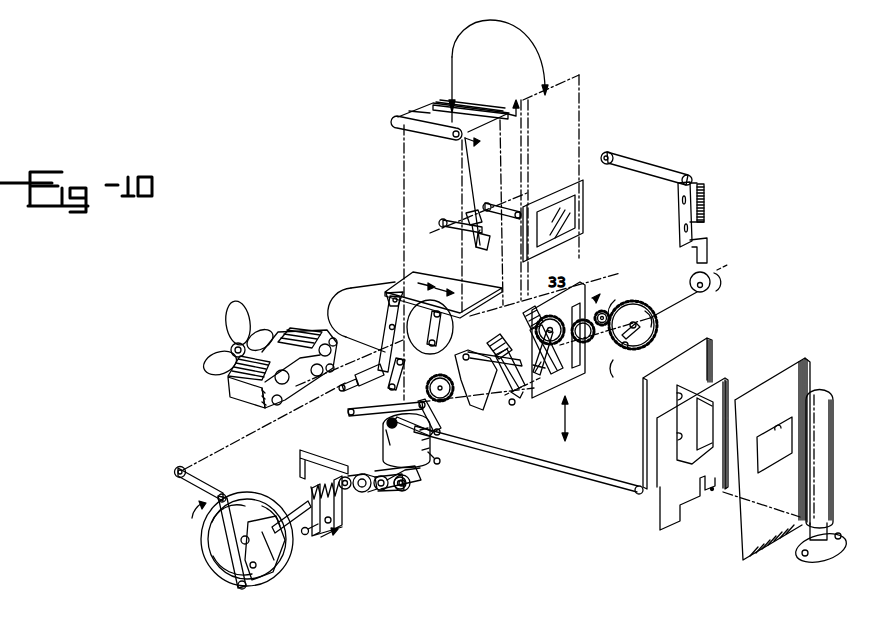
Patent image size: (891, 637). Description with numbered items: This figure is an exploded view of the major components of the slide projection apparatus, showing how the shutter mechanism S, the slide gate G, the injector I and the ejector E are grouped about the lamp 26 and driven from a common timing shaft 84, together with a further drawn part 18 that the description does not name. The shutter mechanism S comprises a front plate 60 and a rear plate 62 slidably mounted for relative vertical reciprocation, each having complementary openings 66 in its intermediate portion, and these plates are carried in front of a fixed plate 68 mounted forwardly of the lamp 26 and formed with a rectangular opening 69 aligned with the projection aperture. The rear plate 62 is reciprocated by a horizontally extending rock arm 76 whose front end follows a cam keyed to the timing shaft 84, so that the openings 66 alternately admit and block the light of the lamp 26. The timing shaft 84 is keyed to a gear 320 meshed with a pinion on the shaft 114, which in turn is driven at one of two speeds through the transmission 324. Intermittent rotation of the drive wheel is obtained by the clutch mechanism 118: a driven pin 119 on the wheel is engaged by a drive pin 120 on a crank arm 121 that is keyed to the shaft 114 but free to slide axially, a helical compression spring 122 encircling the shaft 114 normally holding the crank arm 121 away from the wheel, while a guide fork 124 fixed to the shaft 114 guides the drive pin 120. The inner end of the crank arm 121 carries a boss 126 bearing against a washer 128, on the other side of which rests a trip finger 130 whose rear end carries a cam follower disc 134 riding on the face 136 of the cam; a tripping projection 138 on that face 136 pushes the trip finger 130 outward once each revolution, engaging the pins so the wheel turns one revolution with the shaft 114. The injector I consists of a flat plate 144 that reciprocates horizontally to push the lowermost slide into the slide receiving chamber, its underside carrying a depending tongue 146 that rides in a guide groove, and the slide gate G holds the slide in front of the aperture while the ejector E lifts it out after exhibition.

The pin 18 is at (513, 406).
The lamp 26 is at (823, 438).
The front plate 60 is at (707, 338).
The rear plate 62 is at (666, 516).
The openings 66 is at (682, 438).
The fixed plate 68 is at (806, 372).
The rectangular opening 69 is at (775, 428).
The rock arm 76 is at (522, 460).
The timing shaft 84 is at (460, 505).
The shaft 114 is at (285, 522).
The clutch mechanism 118 is at (346, 506).
The driven pin 119 is at (273, 577).
The drive pin 120 is at (312, 529).
The crank arm 121 is at (356, 492).
The helical compression spring 122 is at (307, 495).
The guide fork 124 is at (288, 497).
The boss 126 is at (324, 479).
The washer 128 is at (347, 476).
The trip finger 130 is at (308, 452).
The cam follower disc 134 is at (382, 492).
The face 136 is at (426, 458).
The tripping projection 138 is at (398, 492).
The flat plate 144 is at (444, 303).
The depending tongue 146 is at (508, 330).
The gear 320 is at (655, 330).
The transmission 324 is at (558, 316).
The ejector E is at (582, 373).
The slide gate G is at (503, 340).
The injector I is at (394, 291).
The shutter mechanism S is at (722, 362).